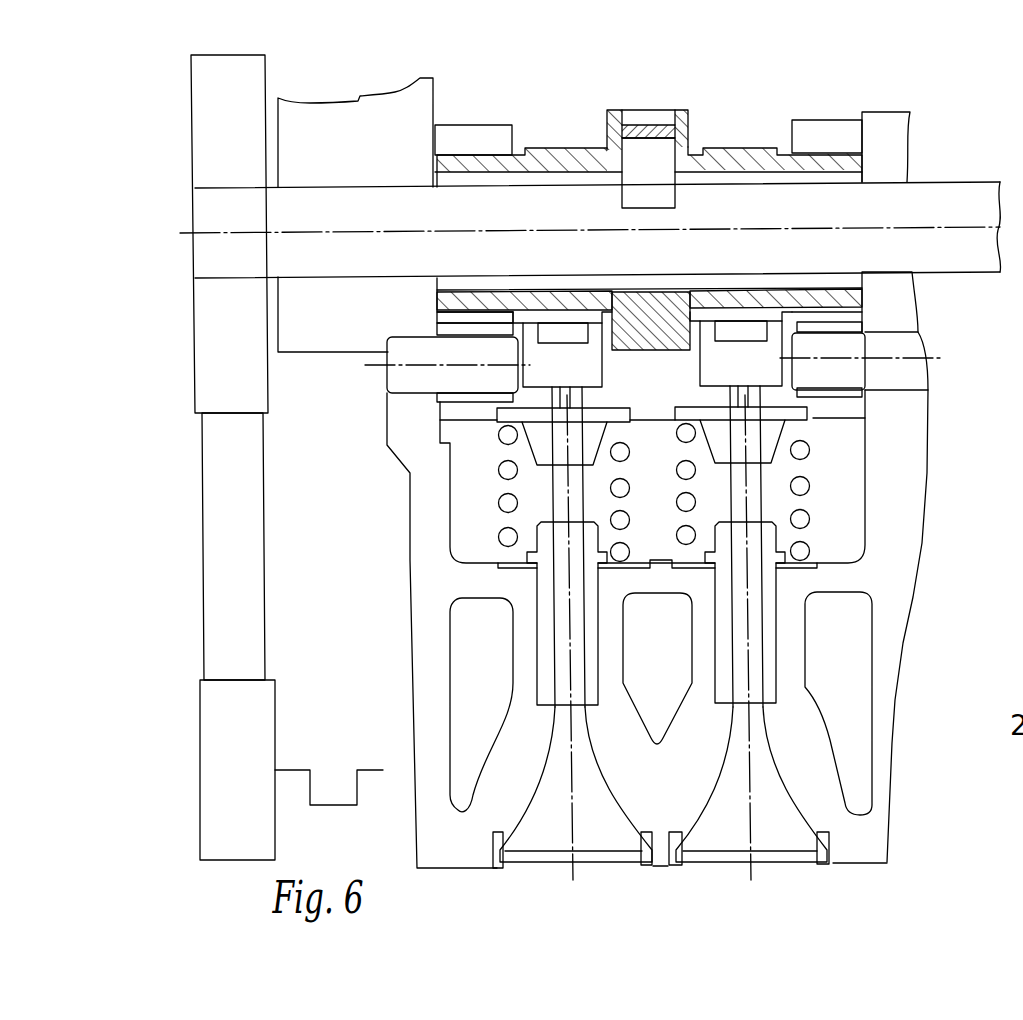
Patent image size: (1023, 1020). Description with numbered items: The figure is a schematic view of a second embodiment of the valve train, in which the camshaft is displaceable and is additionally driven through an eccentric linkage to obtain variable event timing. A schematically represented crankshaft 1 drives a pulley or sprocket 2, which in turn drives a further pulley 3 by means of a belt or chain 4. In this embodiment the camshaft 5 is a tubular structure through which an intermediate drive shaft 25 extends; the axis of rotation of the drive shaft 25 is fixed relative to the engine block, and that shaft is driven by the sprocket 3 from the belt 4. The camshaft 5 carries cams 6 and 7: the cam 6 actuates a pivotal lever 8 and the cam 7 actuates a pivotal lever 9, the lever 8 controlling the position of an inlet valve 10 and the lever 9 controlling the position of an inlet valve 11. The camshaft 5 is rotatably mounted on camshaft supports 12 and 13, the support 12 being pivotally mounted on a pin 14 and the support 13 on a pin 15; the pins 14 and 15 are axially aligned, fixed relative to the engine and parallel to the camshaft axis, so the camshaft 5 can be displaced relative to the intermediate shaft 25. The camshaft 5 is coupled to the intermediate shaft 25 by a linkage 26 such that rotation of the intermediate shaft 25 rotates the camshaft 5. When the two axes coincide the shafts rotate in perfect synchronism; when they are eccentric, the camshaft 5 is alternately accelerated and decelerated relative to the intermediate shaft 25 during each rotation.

The crankshaft 1 is at (333, 802).
The pulley or sprocket 2 is at (230, 765).
The pulley 3 is at (210, 134).
The belt or chain 4 is at (228, 541).
The camshaft 5 is at (518, 152).
The cam 6 is at (567, 147).
The cam 7 is at (727, 147).
The pivotal lever 8 is at (582, 372).
The pivotal lever 9 is at (708, 370).
The inlet valve 10 is at (592, 840).
The inlet valve 11 is at (760, 840).
The camshaft support 12 is at (490, 135).
The camshaft support 13 is at (810, 130).
The pin 14 is at (418, 377).
The pin 15 is at (892, 367).
The intermediate drive shaft 25 is at (205, 232).
The linkage 26 is at (643, 153).